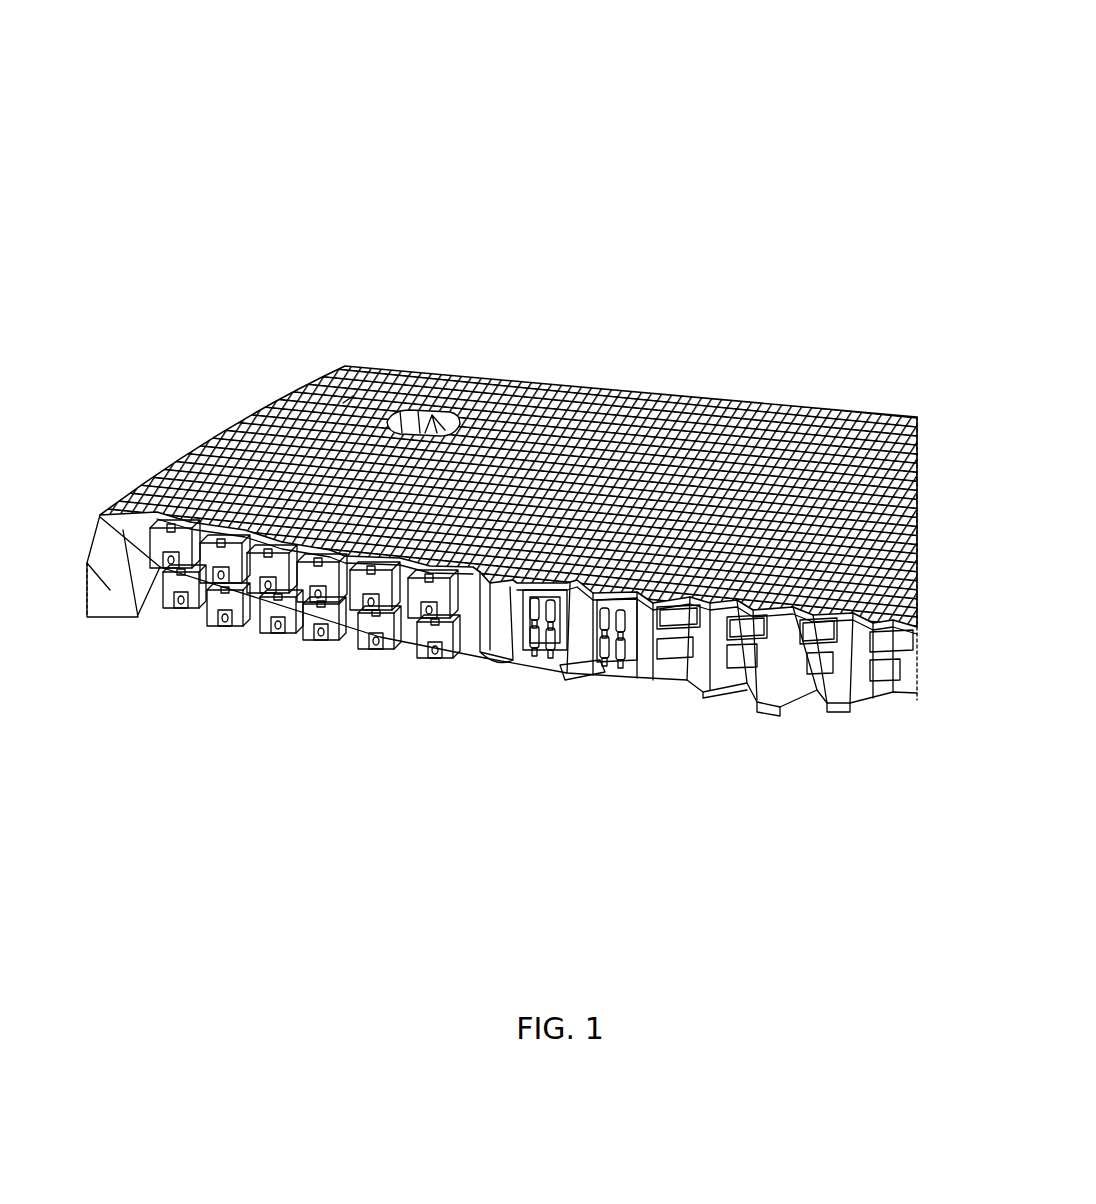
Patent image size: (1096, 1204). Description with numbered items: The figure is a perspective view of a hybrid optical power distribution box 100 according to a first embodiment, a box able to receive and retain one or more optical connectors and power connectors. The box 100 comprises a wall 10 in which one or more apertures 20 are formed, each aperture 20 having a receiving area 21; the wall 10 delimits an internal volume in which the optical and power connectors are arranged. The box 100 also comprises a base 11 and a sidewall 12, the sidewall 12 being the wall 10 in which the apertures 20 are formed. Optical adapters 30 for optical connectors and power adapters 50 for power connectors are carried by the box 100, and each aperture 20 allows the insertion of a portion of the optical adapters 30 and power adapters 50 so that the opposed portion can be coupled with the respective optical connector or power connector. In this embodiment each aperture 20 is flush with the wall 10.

The hybrid optical power distribution box 100 is at (345, 242).
The wall 10 is at (570, 385).
The sidewall 12 is at (343, 403).
The receiving area 21 is at (745, 630).
The base 11 is at (777, 712).
The aperture 20 is at (730, 667).
The optical adapter 30 is at (152, 523).
The power adapter 50 is at (521, 652).